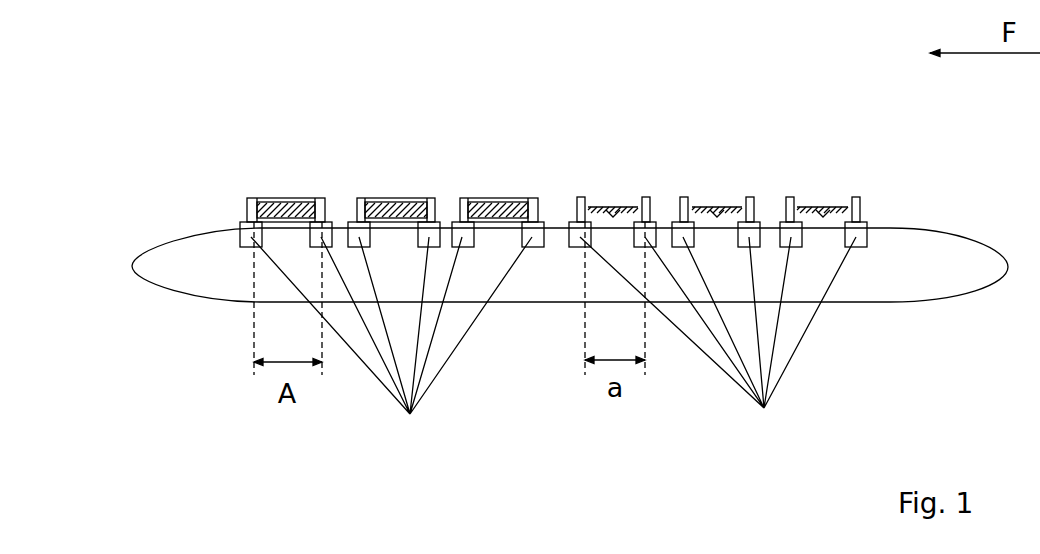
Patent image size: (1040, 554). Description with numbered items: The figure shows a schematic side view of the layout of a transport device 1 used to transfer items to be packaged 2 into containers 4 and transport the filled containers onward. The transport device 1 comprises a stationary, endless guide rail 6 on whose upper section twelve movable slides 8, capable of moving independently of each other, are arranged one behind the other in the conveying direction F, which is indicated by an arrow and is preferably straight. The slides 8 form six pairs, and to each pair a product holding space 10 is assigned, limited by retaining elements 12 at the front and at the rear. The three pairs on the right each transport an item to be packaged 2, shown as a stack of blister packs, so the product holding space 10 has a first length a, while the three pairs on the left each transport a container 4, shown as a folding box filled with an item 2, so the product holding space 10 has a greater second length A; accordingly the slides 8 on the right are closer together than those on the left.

The transport device 1 is at (115, 160).
The item to be packaged 2 is at (526, 133).
The container 4 is at (288, 197).
The guide rail 6 is at (558, 302).
The slide 8 is at (553, 346).
The product holding space 10 is at (300, 197).
The retaining element 12 is at (249, 197).